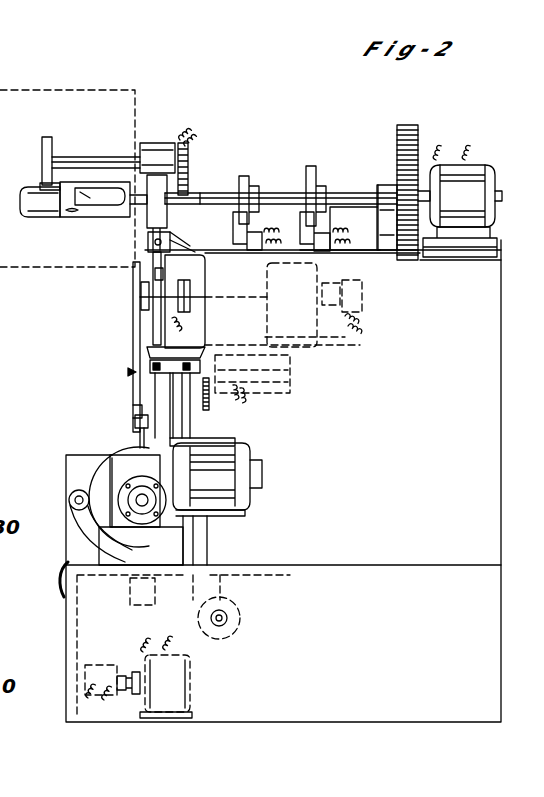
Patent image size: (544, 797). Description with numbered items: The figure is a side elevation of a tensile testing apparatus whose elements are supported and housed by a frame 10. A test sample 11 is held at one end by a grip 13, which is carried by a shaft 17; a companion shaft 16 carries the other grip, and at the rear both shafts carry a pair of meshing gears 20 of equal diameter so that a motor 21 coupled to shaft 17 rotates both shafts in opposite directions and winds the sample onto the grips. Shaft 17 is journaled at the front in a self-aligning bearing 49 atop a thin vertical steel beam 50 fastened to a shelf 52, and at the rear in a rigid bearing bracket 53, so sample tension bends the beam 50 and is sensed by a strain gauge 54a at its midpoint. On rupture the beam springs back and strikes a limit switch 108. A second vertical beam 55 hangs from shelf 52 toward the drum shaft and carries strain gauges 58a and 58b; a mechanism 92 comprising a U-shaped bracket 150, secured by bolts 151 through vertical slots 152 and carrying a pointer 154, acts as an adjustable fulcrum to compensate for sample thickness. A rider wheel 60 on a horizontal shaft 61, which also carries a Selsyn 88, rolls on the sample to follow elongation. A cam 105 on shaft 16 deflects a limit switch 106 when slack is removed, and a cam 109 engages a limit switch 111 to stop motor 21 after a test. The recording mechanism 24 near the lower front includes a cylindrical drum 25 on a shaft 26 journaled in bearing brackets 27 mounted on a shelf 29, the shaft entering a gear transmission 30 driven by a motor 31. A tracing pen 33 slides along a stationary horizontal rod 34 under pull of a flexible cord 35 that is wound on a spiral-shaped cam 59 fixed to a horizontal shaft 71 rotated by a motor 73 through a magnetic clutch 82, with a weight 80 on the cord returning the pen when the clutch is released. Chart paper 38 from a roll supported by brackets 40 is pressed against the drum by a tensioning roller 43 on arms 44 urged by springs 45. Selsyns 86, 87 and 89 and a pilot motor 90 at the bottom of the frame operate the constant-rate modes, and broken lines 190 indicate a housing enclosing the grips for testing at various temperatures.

The frame 10 is at (501, 521).
The test sample 11 is at (48, 219).
The grip 13 is at (82, 230).
The shaft 16 is at (335, 192).
The shaft 17 is at (355, 198).
The meshing gears 20 is at (410, 127).
The motor 21 is at (473, 171).
The recording mechanism 24 is at (90, 456).
The cylindrical drum 25 is at (195, 555).
The shaft 26 is at (195, 523).
The bearing brackets 27 is at (195, 539).
The shelf 29 is at (382, 565).
The gear transmission 30 is at (112, 474).
The motor 31 is at (260, 482).
The tracing pen 33 is at (142, 446).
The stationary horizontal rod 34 is at (138, 414).
The flexible cord 35 is at (140, 342).
The roll of chart paper 38 is at (60, 586).
The brackets 40 is at (222, 589).
The tensioning roller 43 is at (69, 503).
The arms 44 is at (72, 559).
The springs 45 is at (108, 487).
The self-aligning bearing 49 is at (148, 220).
The vertical steel beam 50 is at (160, 320).
The shelf 52 is at (352, 340).
The rigid bearing bracket 53 is at (378, 214).
The electric strain gauge 54a is at (142, 290).
The second vertical beam 55 is at (205, 405).
The electric strain gauge 58a is at (138, 432).
The electric strain gauge 58b is at (200, 440).
The spiral-shaped cam 59 is at (154, 277).
The rider wheel 60 is at (48, 150).
The horizontal shaft 61 is at (66, 168).
The horizontal shaft 71 is at (216, 294).
The motor 73 is at (320, 346).
The weight 80 is at (128, 602).
The magnetic clutch 82 is at (192, 300).
The Selsyn 86 is at (244, 395).
The Selsyn 87 is at (362, 311).
The Selsyn 88 is at (153, 150).
The Selsyn 89 is at (100, 666).
The pilot motor 90 is at (190, 692).
The mechanism 92 is at (130, 372).
The cam 105 is at (247, 178).
The limit switch 106 is at (250, 246).
The limit switch 108 is at (150, 242).
The cam 109 is at (310, 168).
The limit switch 111 is at (312, 247).
The U-shaped bracket 150 is at (148, 355).
The bolts 151 is at (182, 353).
The vertical slots 152 is at (225, 381).
The pointer 154 is at (222, 368).
The housing 190 is at (43, 90).